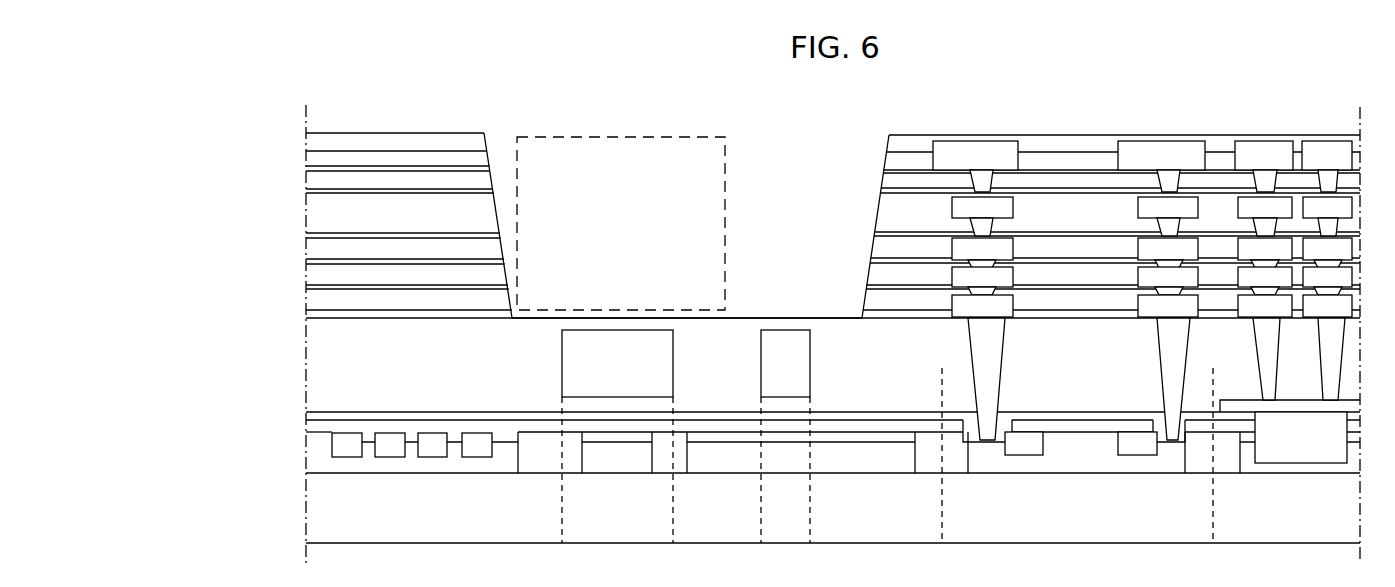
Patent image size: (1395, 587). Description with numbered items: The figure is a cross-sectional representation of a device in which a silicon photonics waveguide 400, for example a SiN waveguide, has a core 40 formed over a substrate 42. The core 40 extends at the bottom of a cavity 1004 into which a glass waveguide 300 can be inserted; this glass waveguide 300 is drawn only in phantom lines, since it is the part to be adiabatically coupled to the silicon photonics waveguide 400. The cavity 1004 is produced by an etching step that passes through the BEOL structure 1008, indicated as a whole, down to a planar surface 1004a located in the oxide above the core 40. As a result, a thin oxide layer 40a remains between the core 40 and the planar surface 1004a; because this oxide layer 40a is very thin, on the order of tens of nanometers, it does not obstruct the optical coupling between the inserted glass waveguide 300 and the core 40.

The core 40 is at (565, 372).
The thin oxide layer 40a is at (618, 327).
The substrate 42 is at (330, 390).
The waveguide 300 is at (686, 134).
The silicon photonics waveguide 400 is at (288, 324).
The cavity 1004 is at (595, 185).
The planar surface 1004a is at (790, 314).
The BEOL structure 1008 is at (1250, 110).